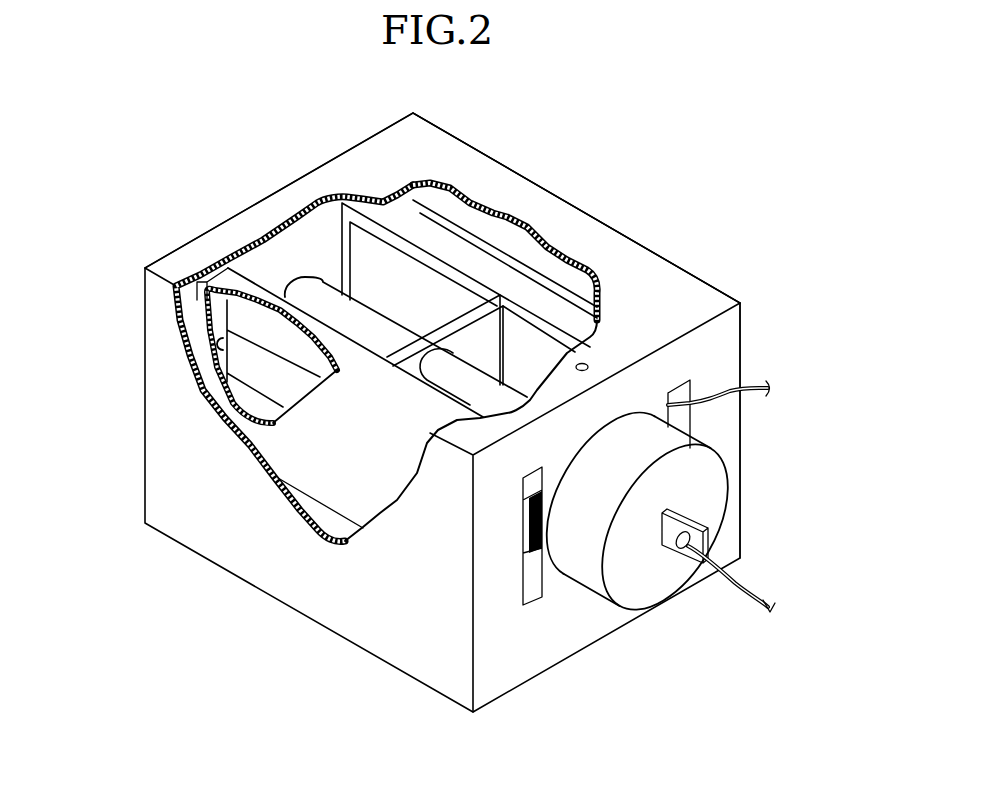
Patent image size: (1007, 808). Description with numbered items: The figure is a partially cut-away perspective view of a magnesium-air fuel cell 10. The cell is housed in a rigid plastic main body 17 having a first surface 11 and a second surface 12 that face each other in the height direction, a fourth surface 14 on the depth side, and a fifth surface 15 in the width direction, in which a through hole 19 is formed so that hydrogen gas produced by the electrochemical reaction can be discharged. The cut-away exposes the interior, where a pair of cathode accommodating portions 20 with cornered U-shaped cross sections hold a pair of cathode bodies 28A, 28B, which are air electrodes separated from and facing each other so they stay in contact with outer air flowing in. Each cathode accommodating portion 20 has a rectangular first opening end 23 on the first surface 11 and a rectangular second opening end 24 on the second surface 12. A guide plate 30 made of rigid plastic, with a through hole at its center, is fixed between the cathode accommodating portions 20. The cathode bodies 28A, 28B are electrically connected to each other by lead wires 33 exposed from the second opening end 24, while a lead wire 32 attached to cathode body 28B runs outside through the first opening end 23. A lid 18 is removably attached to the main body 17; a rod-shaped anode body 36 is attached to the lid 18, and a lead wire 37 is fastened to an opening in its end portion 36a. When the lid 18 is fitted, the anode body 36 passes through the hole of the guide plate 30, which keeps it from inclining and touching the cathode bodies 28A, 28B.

The magnesium-air fuel cell 10 is at (457, 406).
The first surface 11 is at (546, 650).
The second surface 12 is at (310, 237).
The fourth surface 14 is at (513, 243).
The fifth surface 15 is at (404, 142).
The main body 17 is at (682, 256).
The lid 18 is at (652, 586).
The through hole 19 is at (590, 362).
The cathode accommodating portion 20 is at (397, 217).
The first opening end 23 is at (528, 553).
The second opening end 24 is at (222, 332).
The cathode body 28A is at (228, 378).
The cathode body 28B is at (424, 283).
The guide plate 30 is at (452, 345).
The lead wire 32 is at (770, 387).
The lead wire 33 is at (221, 325).
The anode body 36 is at (317, 293).
The end portion 36a is at (705, 530).
The lead wire 37 is at (750, 590).